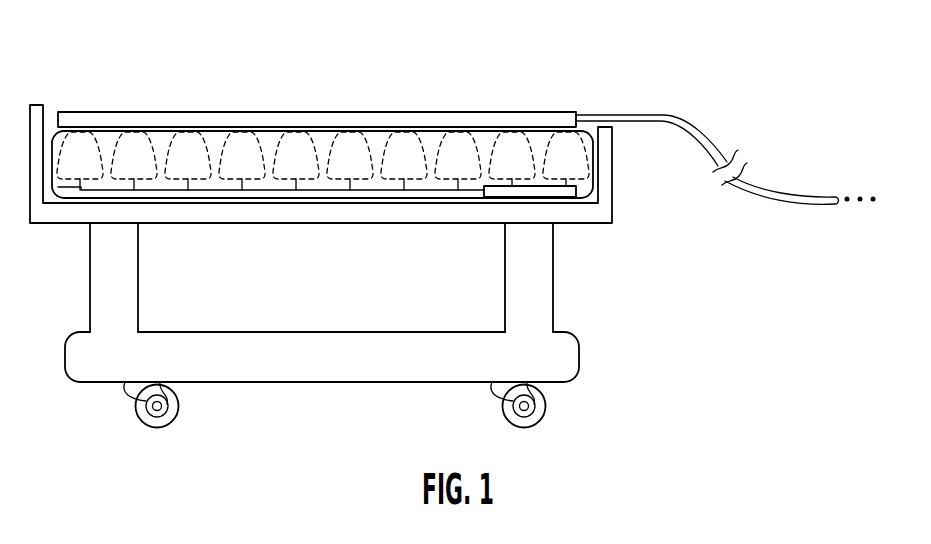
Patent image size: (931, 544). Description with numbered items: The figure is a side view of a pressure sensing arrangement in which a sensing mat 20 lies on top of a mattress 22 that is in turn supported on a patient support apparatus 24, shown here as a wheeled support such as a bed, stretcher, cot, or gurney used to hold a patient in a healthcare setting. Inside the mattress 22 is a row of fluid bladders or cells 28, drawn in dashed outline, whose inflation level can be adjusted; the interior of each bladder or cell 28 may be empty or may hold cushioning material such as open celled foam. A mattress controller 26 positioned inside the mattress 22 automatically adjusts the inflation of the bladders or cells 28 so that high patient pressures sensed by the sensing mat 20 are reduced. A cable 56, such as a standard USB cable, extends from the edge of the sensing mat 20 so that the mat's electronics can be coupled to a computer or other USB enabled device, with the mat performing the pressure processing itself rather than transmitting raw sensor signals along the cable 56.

The sensing mat 20 is at (142, 120).
The mattress 22 is at (423, 137).
The patient support apparatus 24 is at (276, 389).
The mattress controller 26 is at (530, 197).
The fluid bladders or cells 28 is at (350, 137).
The cable 56 is at (682, 124).